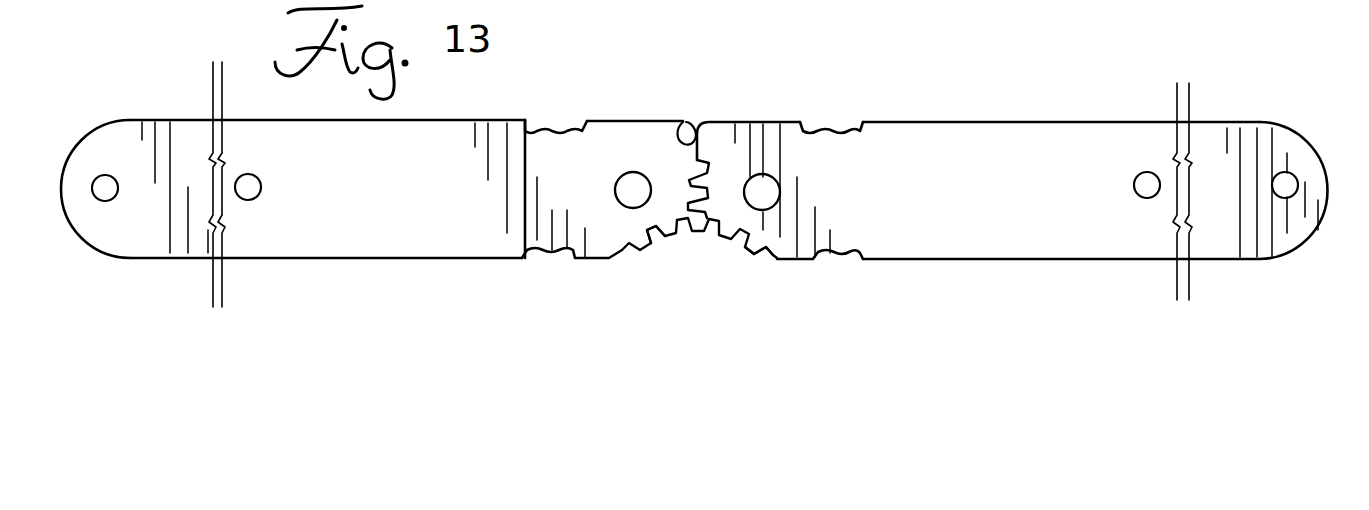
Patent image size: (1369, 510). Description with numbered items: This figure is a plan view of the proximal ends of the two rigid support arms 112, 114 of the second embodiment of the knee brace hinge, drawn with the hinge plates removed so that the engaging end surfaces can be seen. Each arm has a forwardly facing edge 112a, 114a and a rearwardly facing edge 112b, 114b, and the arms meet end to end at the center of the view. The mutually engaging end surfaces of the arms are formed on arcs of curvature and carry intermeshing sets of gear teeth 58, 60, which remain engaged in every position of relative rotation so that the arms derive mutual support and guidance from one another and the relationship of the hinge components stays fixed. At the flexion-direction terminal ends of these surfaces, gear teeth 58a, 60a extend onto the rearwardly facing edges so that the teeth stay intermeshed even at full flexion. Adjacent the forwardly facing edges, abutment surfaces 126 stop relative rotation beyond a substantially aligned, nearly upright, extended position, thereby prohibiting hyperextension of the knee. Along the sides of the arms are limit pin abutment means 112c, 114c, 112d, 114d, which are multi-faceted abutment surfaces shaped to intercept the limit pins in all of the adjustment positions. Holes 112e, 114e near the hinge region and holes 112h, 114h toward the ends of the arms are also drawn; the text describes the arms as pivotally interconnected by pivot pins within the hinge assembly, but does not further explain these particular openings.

The gear teeth 58 is at (643, 224).
The gear teeth 58a is at (667, 245).
The gear teeth 60 is at (727, 161).
The gear teeth 60a is at (765, 262).
The rigid support arm 112 is at (1218, 252).
The forwardly facing edge 112a is at (993, 122).
The rearwardly facing edge 112b is at (1080, 262).
The limit pin abutment means 112c is at (858, 128).
The limit pin abutment means 112d is at (860, 260).
The hole in second bar 112e is at (1145, 173).
The end hole in second bar 112h is at (1292, 176).
The rigid support arm 114 is at (243, 245).
The forwardly facing edge 114a is at (443, 120).
The rearwardly facing edge 114b is at (397, 258).
The limit pin abutment means 114c is at (542, 128).
The limit pin abutment means 114d is at (570, 258).
The hole in first bar 114e is at (248, 200).
The end hole in first bar 114h is at (105, 201).
The abutment surfaces 126 is at (686, 122).